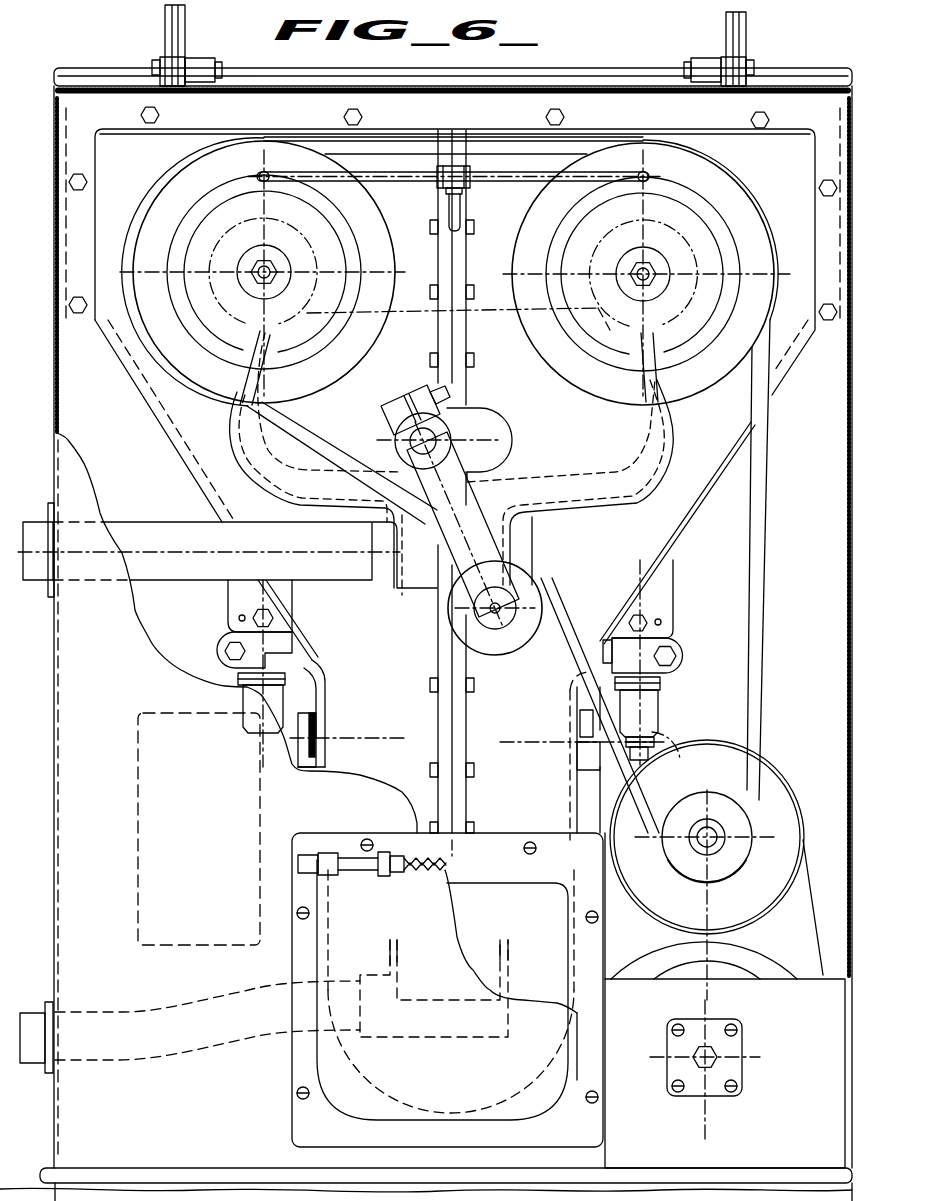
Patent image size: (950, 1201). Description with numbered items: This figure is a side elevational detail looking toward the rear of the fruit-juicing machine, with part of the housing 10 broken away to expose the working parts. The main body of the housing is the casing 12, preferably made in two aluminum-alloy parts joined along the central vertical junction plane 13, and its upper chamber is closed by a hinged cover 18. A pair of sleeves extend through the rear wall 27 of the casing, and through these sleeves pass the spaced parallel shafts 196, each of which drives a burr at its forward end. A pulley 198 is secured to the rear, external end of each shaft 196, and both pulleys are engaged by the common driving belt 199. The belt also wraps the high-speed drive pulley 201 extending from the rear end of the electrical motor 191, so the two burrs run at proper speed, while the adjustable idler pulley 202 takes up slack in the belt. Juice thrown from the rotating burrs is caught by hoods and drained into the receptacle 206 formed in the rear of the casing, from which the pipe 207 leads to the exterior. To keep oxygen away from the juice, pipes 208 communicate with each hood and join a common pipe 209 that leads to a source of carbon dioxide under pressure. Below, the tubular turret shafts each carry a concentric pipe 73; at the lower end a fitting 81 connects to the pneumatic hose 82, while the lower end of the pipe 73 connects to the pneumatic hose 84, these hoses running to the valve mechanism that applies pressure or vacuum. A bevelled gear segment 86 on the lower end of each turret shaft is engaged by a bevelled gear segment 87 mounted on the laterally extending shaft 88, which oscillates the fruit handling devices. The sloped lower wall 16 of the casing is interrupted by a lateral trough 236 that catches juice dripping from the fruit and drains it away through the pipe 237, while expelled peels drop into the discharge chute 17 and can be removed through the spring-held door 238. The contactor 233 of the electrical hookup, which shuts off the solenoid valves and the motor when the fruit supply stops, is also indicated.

The housing 10 is at (68, 705).
The casing 12 is at (156, 425).
The central vertical junction plane 13 is at (458, 345).
The lower wall 16 is at (512, 1104).
The discharge chute 17 is at (497, 895).
The hinged cover 18 is at (626, 82).
The rear wall 27 is at (693, 481).
The pipe 73 is at (670, 718).
The fitting 81 is at (253, 693).
The pneumatic hose 82 is at (667, 743).
The pneumatic hose 84 is at (643, 755).
The bevelled gear segment 86 is at (296, 660).
The bevelled gear segment 87 is at (312, 697).
The laterally extending shaft 88 is at (298, 762).
The electrical motor 191 is at (786, 786).
The shaft 196 is at (272, 282).
The pulley 198 is at (174, 188).
The driving belt 199 is at (333, 448).
The high-speed drive pulley 201 is at (682, 862).
The adjustable idler pulley 202 is at (500, 645).
The receptacle 206 is at (549, 500).
The pipe 207 is at (153, 530).
The pipe 208 is at (391, 181).
The common pipe 209 is at (452, 232).
The contactor 233 is at (140, 778).
The lateral trough 236 is at (417, 1032).
The pipe 237 is at (206, 1042).
The spring-held door 238 is at (572, 1047).